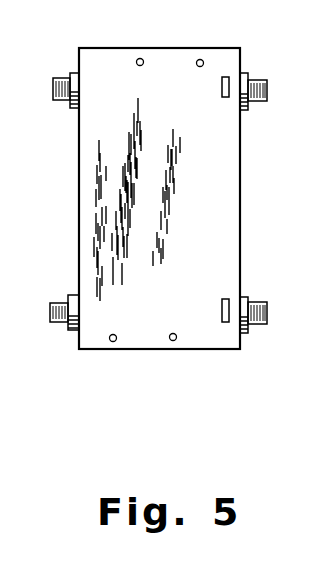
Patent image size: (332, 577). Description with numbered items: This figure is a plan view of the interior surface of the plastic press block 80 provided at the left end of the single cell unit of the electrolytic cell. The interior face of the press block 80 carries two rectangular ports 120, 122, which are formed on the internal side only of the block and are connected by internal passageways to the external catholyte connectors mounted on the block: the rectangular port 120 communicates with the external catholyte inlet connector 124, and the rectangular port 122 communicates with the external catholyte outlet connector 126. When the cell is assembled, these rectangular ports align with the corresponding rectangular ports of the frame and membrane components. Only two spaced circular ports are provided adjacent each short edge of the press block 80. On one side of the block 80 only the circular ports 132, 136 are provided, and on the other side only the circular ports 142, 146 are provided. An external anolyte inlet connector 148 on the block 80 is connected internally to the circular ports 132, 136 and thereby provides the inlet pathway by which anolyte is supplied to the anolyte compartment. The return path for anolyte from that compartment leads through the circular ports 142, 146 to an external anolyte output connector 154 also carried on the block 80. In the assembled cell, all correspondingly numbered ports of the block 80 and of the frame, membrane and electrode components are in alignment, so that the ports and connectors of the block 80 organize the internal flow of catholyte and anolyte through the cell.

The press block 80 is at (88, 177).
The rectangular port 120 is at (229, 78).
The rectangular port 122 is at (228, 300).
The catholyte inlet connector 124 is at (263, 322).
The catholyte outlet connector 126 is at (258, 98).
The circular port 132 is at (112, 342).
The circular port 136 is at (175, 341).
The circular port 142 is at (139, 58).
The circular port 146 is at (202, 59).
The anolyte inlet connector 148 is at (54, 310).
The anolyte output connector 154 is at (66, 78).